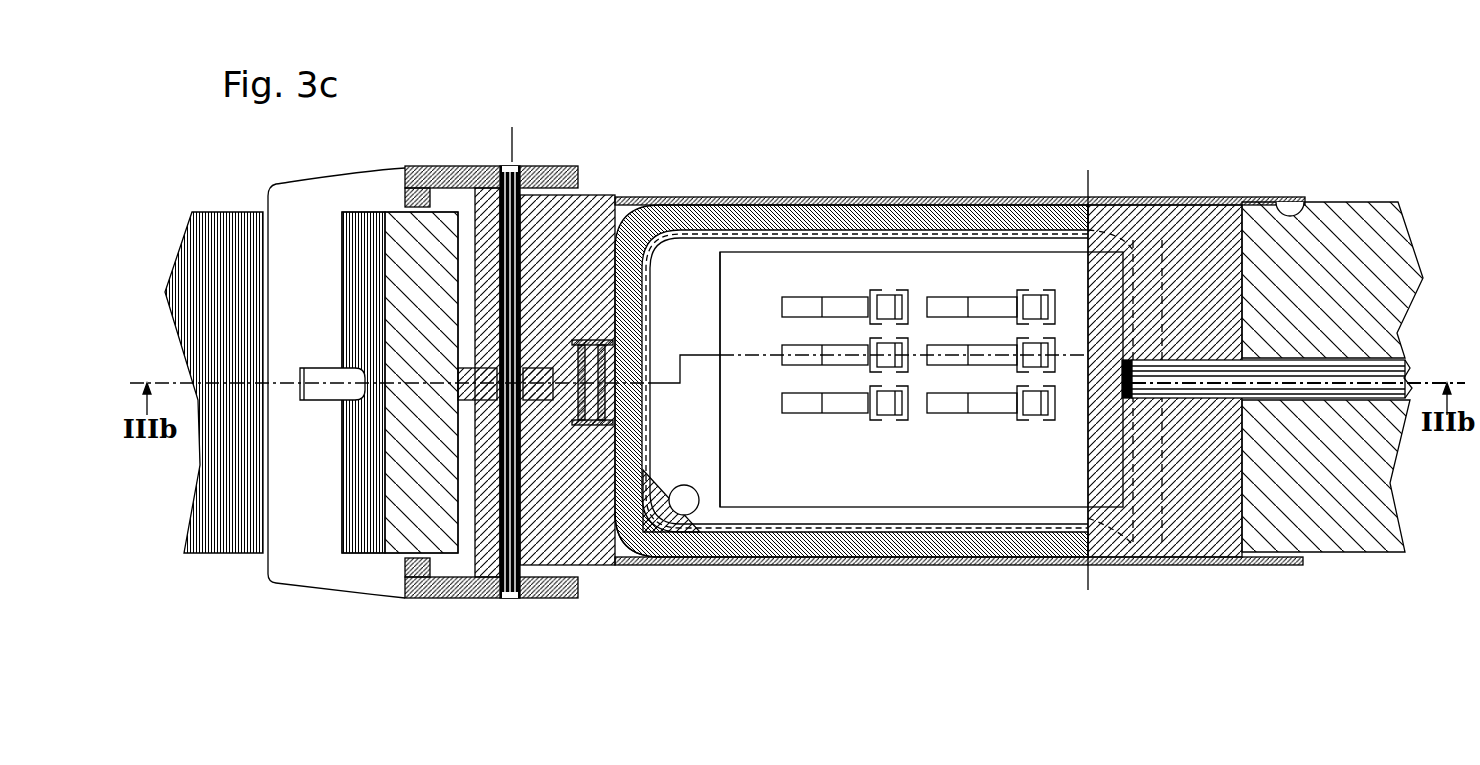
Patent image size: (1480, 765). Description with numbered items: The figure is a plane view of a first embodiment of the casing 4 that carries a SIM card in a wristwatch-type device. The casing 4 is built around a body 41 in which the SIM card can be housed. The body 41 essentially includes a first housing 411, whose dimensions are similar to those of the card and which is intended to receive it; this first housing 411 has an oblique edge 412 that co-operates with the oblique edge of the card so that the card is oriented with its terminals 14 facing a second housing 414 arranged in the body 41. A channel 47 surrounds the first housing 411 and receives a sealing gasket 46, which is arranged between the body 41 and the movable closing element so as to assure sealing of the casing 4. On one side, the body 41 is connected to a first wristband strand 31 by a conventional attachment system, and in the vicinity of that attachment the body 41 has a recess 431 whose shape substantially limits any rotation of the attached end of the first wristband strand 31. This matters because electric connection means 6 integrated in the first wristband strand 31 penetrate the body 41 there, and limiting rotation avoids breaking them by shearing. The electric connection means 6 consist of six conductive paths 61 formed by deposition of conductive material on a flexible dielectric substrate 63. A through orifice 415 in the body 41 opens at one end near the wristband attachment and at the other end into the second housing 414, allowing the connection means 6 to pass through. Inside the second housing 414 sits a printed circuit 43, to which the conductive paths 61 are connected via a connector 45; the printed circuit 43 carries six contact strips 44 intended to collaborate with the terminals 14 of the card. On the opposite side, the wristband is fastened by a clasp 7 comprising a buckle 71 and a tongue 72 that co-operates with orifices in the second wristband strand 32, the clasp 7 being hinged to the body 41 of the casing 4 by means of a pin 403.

The casing 4 is at (1045, 168).
The electric connection means 6 is at (1216, 400).
The clasp 7 is at (470, 150).
The terminals 14 is at (1022, 288).
The first wristband strand 31 is at (1355, 525).
The second wristband strand 32 is at (225, 532).
The body 41 is at (582, 228).
The printed circuit 43 is at (823, 488).
The contact strips 44 is at (990, 403).
The connector 45 is at (1120, 395).
The sealing gasket 46 is at (640, 570).
The channel 47 is at (658, 207).
The conductive paths 61 is at (1418, 362).
The flexible dielectric substrate 63 is at (1305, 392).
The buckle 71 is at (387, 187).
The tongue 72 is at (323, 377).
The pin 403 is at (511, 605).
The first housing 411 is at (645, 273).
The oblique edge 412 is at (688, 537).
The second housing 414 is at (722, 273).
The through orifice 415 is at (1216, 380).
The recess 431 is at (1310, 200).